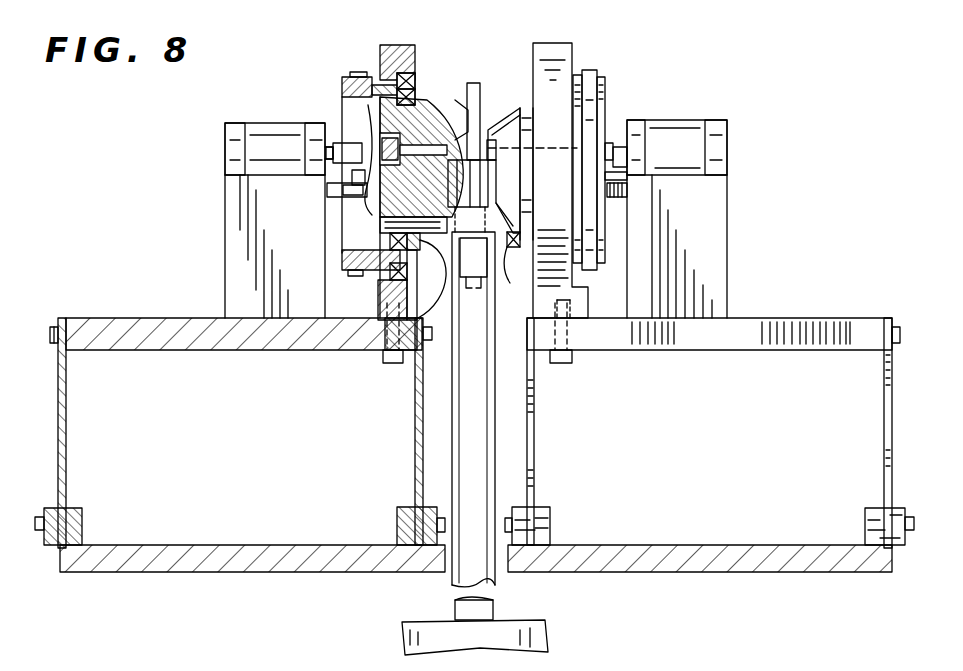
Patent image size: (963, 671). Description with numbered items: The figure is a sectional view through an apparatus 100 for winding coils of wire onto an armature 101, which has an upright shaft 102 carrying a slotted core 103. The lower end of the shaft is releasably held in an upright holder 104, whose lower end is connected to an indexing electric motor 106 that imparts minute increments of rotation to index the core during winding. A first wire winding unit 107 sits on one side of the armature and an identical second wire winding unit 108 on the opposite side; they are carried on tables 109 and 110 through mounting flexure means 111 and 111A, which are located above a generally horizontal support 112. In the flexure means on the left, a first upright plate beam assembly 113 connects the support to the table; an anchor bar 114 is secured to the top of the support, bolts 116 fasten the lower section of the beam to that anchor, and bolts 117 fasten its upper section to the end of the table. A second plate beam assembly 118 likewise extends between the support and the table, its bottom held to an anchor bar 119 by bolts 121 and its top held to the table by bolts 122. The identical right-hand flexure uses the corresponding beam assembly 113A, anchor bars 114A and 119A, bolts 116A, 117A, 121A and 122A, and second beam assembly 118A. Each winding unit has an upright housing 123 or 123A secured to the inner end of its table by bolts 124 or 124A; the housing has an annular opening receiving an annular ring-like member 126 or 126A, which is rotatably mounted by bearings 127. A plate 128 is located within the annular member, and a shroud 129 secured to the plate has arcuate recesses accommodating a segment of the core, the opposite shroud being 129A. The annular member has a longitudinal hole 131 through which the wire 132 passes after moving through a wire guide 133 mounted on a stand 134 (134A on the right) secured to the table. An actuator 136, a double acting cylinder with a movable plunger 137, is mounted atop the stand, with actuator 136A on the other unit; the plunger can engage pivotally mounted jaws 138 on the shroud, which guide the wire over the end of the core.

The apparatus for winding coils of wire 100 is at (748, 110).
The armature 101 is at (482, 62).
The upright shaft 102 is at (484, 83).
The slotted core 103 is at (490, 138).
The upright holder 104 is at (498, 432).
The electric motor 106 is at (548, 640).
The first wire winding unit 107 is at (366, 50).
The second wire winding unit 108 is at (618, 60).
The table 109 is at (172, 320).
The table 110 is at (795, 320).
The mounting flexure means 111 is at (52, 435).
The mounting flexure means 111A is at (900, 410).
The support 112 is at (182, 574).
The first upright plate beam assembly 113 is at (67, 472).
The first upright plate beam assembly 113A is at (884, 422).
The anchor bar 114 is at (85, 527).
The anchor bar 114A is at (865, 520).
The bolts 116 is at (36, 526).
The bolts 116A is at (915, 525).
The bolts 117 is at (50, 335).
The bolts 117A is at (900, 335).
The second plate beam assembly 118 is at (414, 448).
The second plate beam assembly 118A is at (535, 450).
The anchor bar 119 is at (398, 524).
The anchor bar 119A is at (552, 522).
The bolts 121 is at (440, 530).
The bolts 121A is at (506, 530).
The bolts 122 is at (420, 380).
The bolts 122A is at (527, 378).
The housing 123 is at (388, 45).
The housing 123A is at (566, 45).
The bolts 124 is at (380, 362).
The bolts 124A is at (575, 356).
The annular ring-like member 126 is at (366, 85).
The annular ring-like member 126A is at (606, 100).
The bearings 127 is at (405, 70).
The plate 128 is at (382, 220).
The shroud 129 is at (388, 292).
The shroud 129A is at (507, 247).
The longitudinal hole 131 is at (378, 95).
The wire 132 is at (418, 148).
The wire guide 133 is at (393, 200).
The stand 134 is at (236, 228).
The stand 134A is at (700, 255).
The actuator 136 is at (230, 147).
The actuator 136A is at (728, 152).
The plunger 137 is at (352, 145).
The jaws 138 is at (456, 118).